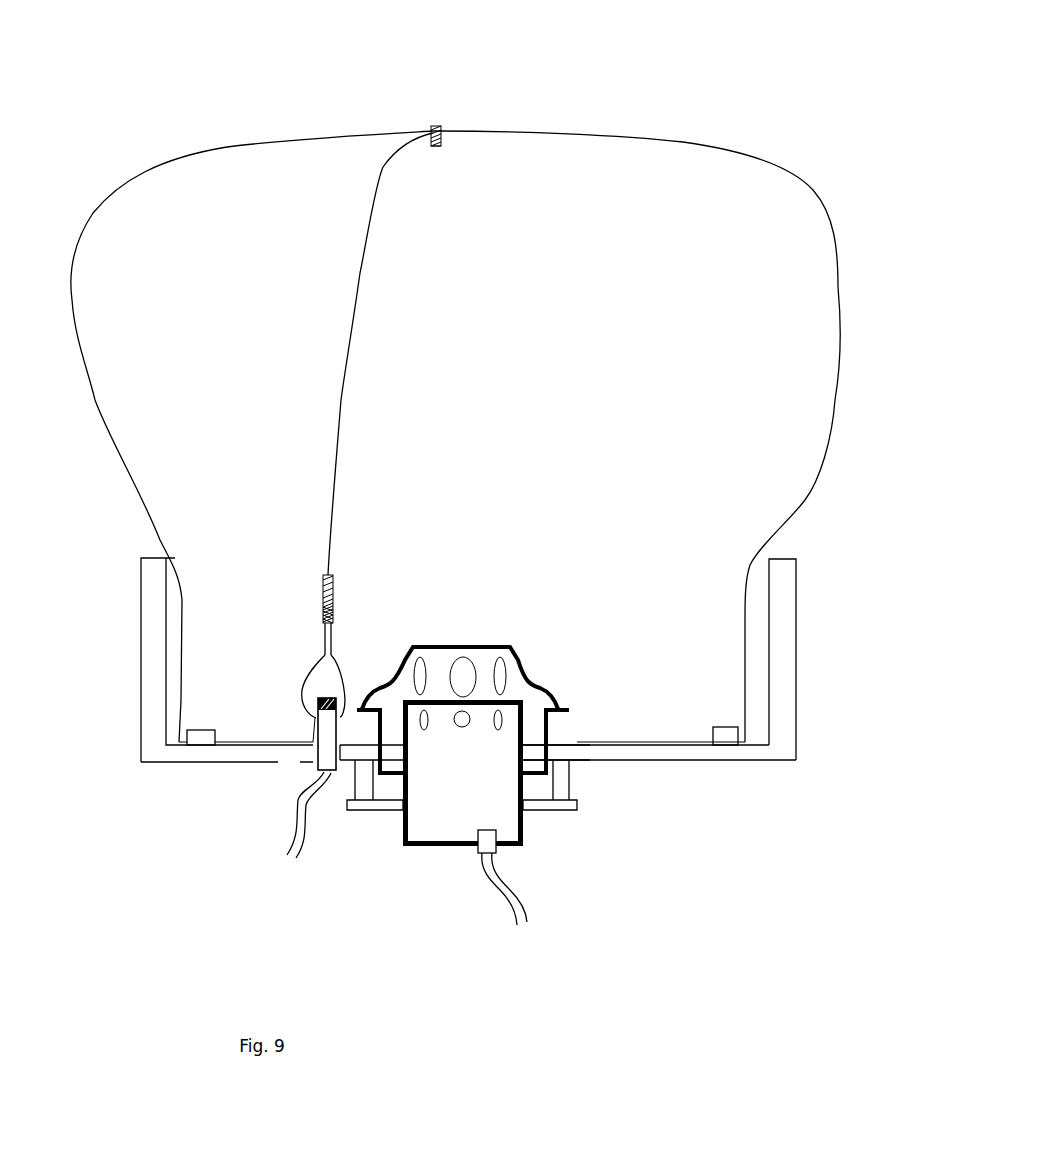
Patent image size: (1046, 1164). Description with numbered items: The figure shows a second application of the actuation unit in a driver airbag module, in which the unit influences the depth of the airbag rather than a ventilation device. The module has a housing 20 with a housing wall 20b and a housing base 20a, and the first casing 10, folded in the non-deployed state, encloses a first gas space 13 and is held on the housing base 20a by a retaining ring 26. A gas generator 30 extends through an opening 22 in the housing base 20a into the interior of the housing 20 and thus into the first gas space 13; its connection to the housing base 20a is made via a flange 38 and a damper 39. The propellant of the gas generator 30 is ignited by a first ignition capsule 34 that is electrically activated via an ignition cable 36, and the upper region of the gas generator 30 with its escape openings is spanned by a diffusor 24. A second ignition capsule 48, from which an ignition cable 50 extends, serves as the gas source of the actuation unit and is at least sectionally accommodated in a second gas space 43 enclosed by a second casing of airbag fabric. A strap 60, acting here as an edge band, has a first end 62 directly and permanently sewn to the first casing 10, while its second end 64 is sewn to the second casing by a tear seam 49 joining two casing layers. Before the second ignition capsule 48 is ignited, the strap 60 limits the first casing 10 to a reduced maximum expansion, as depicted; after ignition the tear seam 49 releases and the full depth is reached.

The first casing 10 is at (683, 142).
The first gas space 13 is at (462, 579).
The housing 20 is at (483, 695).
The housing base 20a is at (697, 762).
The housing wall 20b is at (796, 635).
The opening 22 is at (533, 763).
The diffusor 24 is at (482, 645).
The retaining ring 26 is at (738, 733).
The gas generator 30 is at (440, 745).
The first ignition capsule 34 is at (500, 845).
The ignition cable 36 is at (502, 893).
The flange 38 is at (563, 805).
The damper 39 is at (575, 808).
The second gas space 43 is at (322, 688).
The second ignition capsule 48 is at (323, 752).
The tear seam 49 is at (325, 615).
The ignition cable 50 is at (318, 780).
The strap 60 is at (337, 448).
The first end 62 is at (433, 127).
The second end 64 is at (330, 622).